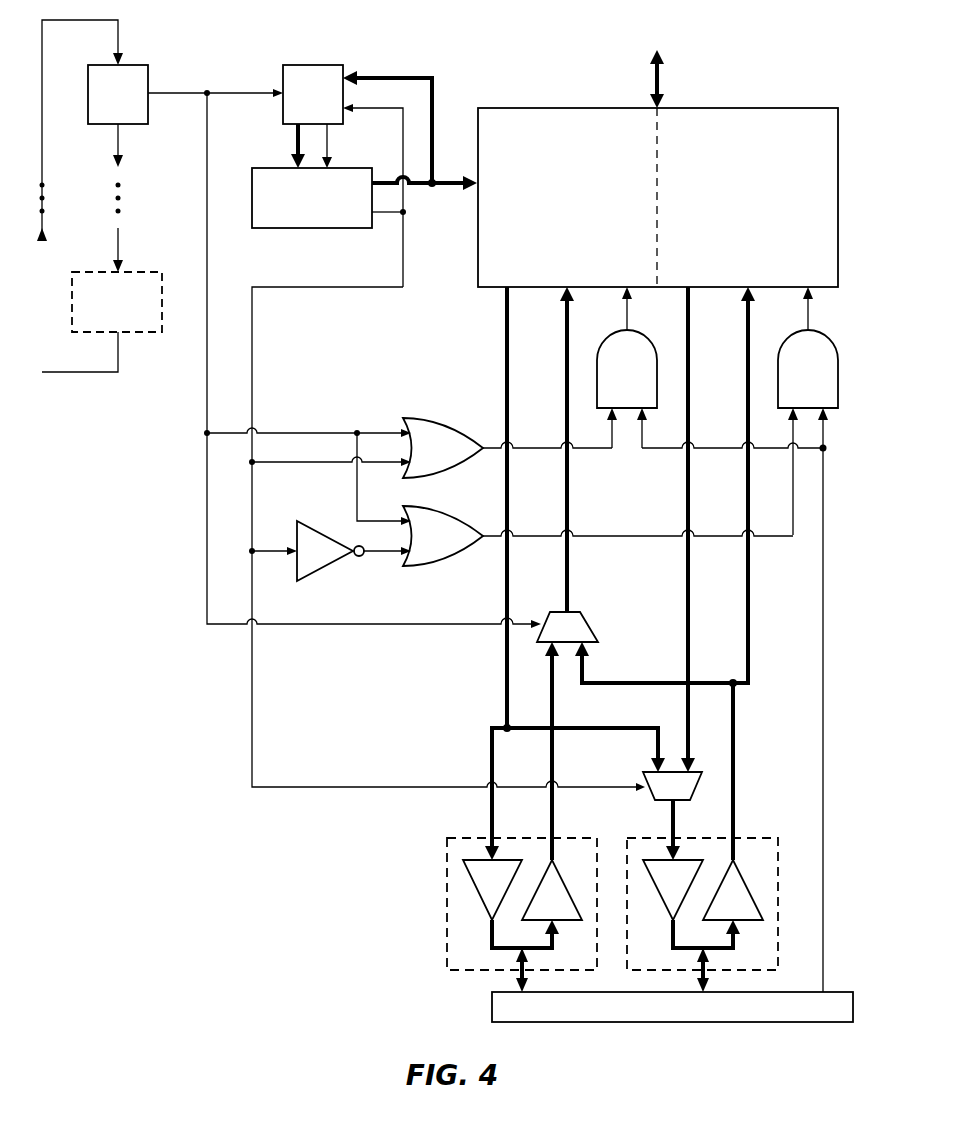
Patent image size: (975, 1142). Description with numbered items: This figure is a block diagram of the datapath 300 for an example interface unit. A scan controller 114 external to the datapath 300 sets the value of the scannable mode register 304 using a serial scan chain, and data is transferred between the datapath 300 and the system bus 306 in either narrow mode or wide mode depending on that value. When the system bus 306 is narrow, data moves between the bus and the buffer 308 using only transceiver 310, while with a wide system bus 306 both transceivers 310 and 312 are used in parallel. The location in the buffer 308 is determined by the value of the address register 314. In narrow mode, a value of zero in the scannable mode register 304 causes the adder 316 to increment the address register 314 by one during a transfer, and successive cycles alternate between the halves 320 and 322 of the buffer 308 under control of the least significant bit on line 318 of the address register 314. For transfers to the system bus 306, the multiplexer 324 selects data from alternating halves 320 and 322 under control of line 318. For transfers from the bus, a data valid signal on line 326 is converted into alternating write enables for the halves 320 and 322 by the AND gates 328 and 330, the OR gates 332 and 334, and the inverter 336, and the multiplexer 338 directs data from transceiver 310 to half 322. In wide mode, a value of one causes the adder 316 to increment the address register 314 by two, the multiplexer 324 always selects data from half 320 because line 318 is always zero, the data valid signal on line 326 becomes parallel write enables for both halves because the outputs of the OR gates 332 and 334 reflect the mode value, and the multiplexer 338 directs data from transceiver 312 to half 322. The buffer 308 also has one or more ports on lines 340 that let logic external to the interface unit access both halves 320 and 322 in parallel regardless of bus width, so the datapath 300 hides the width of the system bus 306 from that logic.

The datapath 300 is at (765, 55).
The scannable mode register 304 is at (133, 65).
The system bus 306 is at (492, 1012).
The buffer 308 is at (623, 108).
The transceiver 310 is at (765, 838).
The transceiver 312 is at (455, 838).
The address register 314 is at (265, 168).
The adder 316 is at (299, 65).
The line 318 is at (265, 287).
The half of buffer 320 is at (733, 194).
The half of buffer 322 is at (553, 194).
The multiplexer 324 is at (695, 790).
The line 326 is at (823, 768).
The AND gate 328 is at (794, 387).
The AND gate 330 is at (613, 387).
The OR gate 332 is at (429, 544).
The OR gate 334 is at (429, 456).
The inverter 336 is at (307, 559).
The multiplexer 338 is at (580, 612).
The lines 340 is at (660, 82).
The scan controller 114 is at (140, 272).